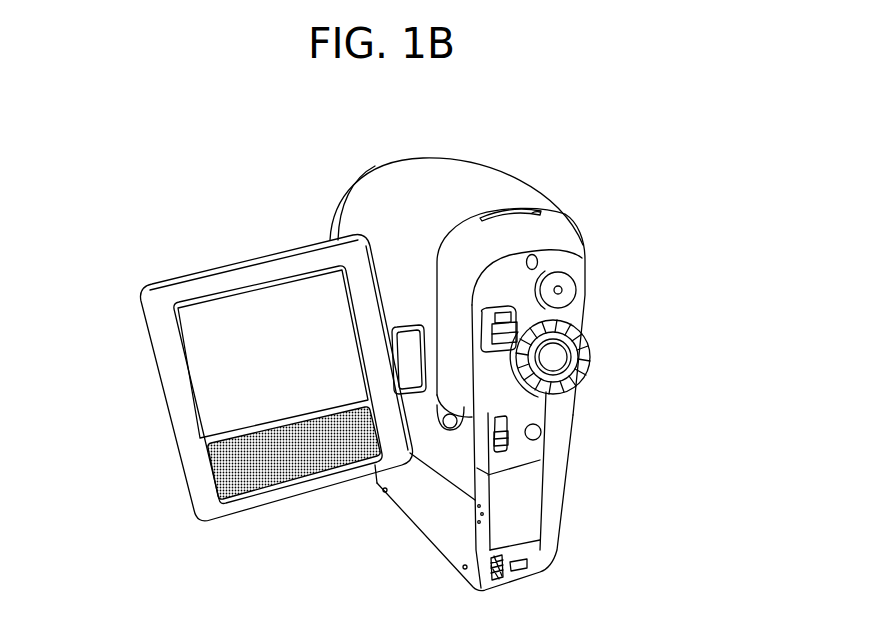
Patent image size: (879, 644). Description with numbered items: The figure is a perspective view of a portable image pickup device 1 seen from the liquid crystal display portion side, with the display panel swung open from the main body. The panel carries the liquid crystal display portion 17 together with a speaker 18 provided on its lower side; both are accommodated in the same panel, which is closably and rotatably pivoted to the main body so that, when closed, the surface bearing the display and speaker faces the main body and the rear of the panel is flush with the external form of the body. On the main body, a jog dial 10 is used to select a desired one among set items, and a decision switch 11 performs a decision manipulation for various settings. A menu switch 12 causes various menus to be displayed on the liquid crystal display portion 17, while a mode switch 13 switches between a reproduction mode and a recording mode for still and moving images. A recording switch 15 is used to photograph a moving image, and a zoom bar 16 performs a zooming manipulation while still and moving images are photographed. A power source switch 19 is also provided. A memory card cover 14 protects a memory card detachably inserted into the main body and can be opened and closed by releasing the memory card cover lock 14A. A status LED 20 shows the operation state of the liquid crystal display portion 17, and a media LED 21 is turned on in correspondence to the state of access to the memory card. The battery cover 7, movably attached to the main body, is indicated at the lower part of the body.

The portable image pickup device 1 is at (573, 105).
The battery cover 7 is at (560, 548).
The jog dial 10 is at (588, 338).
The decision switch 11 is at (560, 366).
The menu switch 12 is at (541, 432).
The mode switch 13 is at (508, 442).
The memory card cover 14 is at (515, 503).
The memory card cover lock 14A is at (500, 570).
The recording switch 15 is at (560, 292).
The zoom bar 16 is at (503, 320).
The liquid crystal display portion 17 is at (243, 327).
The speaker 18 is at (220, 463).
The power source switch 19 is at (447, 413).
The status LED 20 is at (484, 210).
The media LED 21 is at (538, 205).